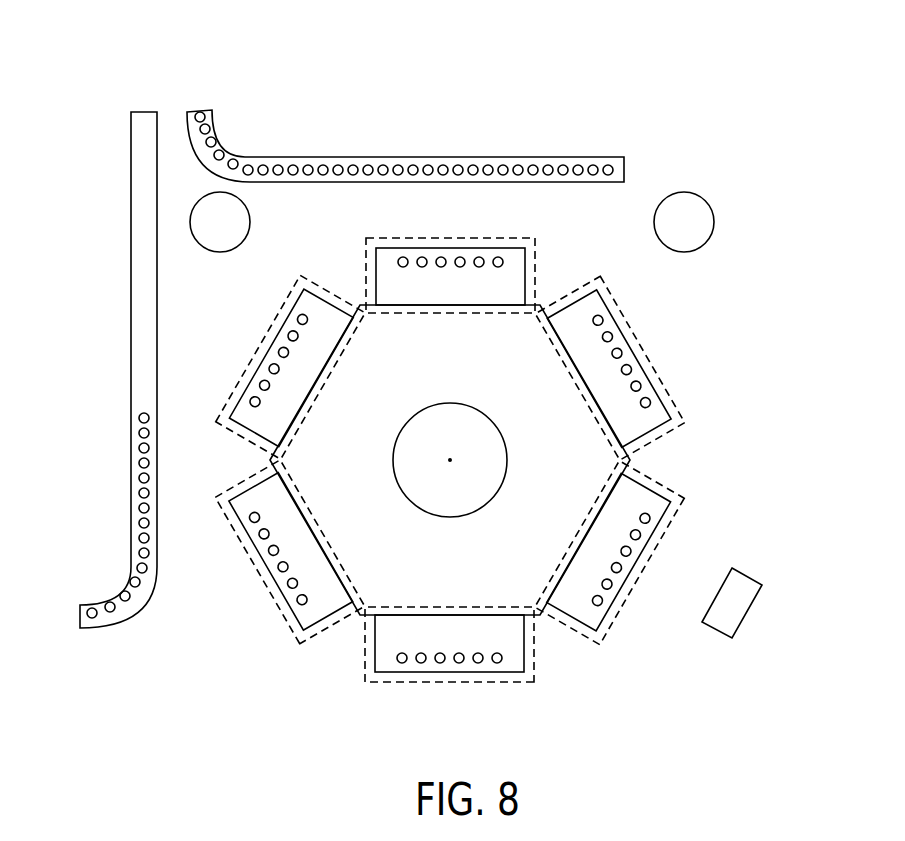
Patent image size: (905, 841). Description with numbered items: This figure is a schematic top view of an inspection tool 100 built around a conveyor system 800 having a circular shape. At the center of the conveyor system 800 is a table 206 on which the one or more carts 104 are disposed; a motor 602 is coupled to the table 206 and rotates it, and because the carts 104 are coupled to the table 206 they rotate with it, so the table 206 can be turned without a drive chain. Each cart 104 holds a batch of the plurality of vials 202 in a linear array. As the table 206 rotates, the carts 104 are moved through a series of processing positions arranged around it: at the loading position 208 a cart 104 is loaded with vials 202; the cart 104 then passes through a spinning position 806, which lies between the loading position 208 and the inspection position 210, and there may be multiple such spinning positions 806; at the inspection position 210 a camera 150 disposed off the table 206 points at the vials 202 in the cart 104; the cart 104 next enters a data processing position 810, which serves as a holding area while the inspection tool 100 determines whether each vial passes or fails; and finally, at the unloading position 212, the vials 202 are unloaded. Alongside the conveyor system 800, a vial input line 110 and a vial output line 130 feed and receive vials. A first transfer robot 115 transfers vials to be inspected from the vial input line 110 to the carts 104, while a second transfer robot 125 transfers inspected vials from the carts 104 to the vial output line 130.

The inspection tool 100 is at (96, 78).
The vial input line 110 is at (106, 402).
The first transfer robot 115 is at (190, 224).
The second transfer robot 125 is at (713, 218).
The vial output line 130 is at (375, 118).
The camera 150 is at (750, 612).
The carts 104 is at (500, 248).
The vials 202 is at (277, 546).
The table 206 is at (520, 560).
The loading position 208 is at (270, 322).
The inspection position 210 is at (675, 505).
The unloading position 212 is at (445, 240).
The motor 602 is at (441, 384).
The conveyor system 800 is at (292, 672).
The spinning position 806 is at (262, 572).
The data processing position 810 is at (640, 348).